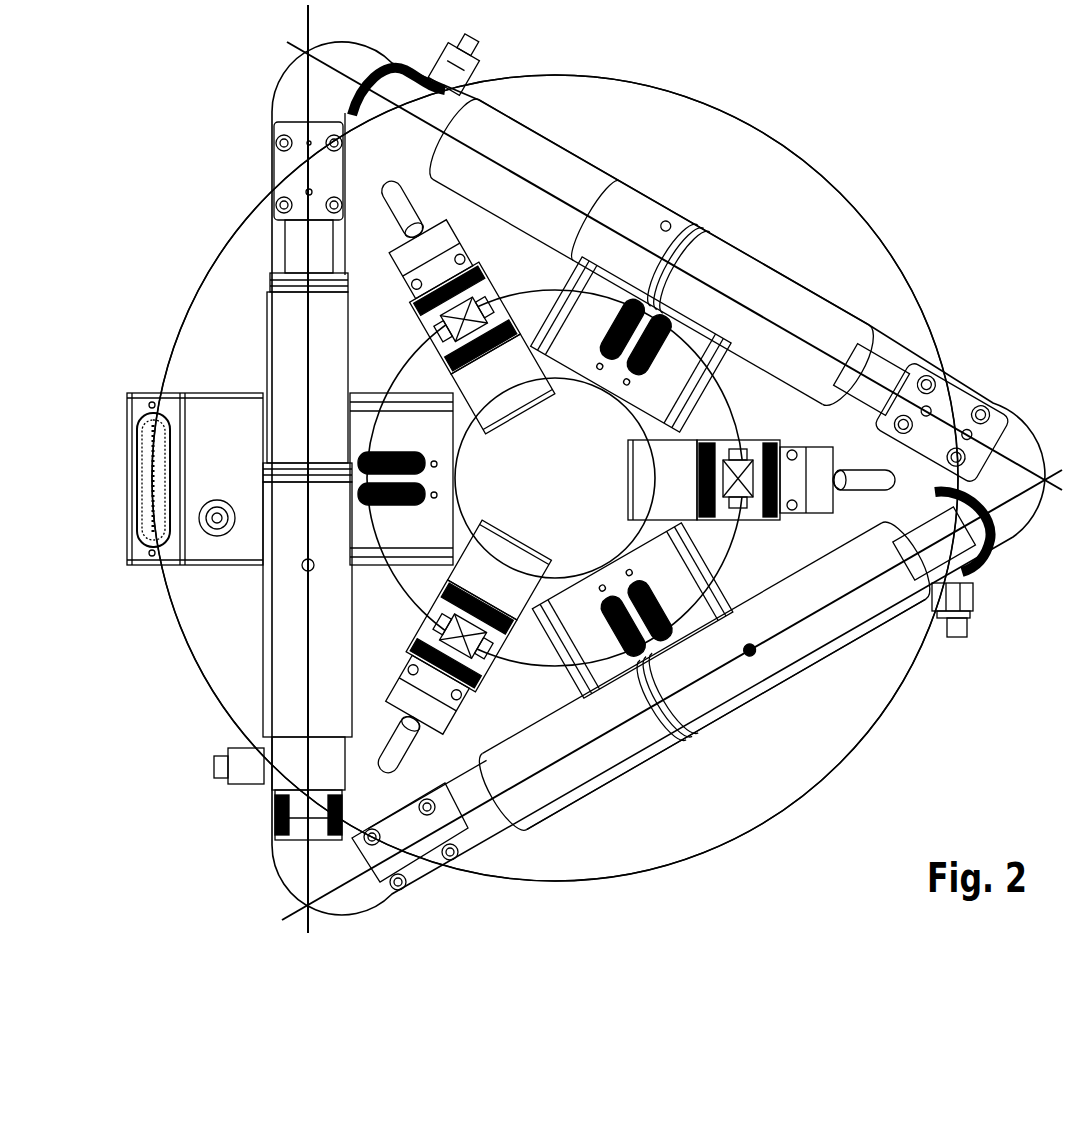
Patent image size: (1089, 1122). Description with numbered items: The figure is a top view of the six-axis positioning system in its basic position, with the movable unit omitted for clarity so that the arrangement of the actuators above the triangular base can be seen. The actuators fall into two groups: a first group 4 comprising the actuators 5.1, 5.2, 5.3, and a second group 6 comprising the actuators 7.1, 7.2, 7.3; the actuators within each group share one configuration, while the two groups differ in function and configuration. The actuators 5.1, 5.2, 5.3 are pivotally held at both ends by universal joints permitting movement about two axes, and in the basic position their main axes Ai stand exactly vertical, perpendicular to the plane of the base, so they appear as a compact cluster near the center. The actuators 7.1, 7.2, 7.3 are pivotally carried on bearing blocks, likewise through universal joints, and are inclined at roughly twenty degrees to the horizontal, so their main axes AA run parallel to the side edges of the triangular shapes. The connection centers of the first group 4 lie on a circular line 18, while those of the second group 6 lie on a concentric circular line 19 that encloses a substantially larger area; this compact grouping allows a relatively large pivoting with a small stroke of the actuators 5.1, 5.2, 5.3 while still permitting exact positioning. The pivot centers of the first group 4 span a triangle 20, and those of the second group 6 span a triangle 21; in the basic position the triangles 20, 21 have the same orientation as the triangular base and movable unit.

The first group 4 is at (748, 410).
The actuator 5.1 is at (497, 287).
The actuator 5.2 is at (772, 433).
The actuator 5.3 is at (483, 692).
The second group 6 is at (720, 733).
The actuator 7.1 is at (660, 203).
The actuator 7.2 is at (822, 662).
The actuator 7.3 is at (263, 688).
The circular line 18 is at (398, 587).
The circular line 19 is at (195, 290).
The triangle 20 is at (537, 603).
The triangle 21 is at (495, 157).
The main axes AA is at (850, 592).
The main axes Ai is at (480, 313).